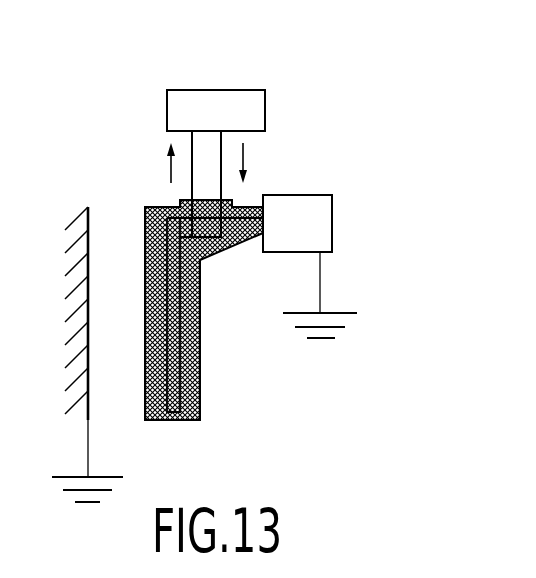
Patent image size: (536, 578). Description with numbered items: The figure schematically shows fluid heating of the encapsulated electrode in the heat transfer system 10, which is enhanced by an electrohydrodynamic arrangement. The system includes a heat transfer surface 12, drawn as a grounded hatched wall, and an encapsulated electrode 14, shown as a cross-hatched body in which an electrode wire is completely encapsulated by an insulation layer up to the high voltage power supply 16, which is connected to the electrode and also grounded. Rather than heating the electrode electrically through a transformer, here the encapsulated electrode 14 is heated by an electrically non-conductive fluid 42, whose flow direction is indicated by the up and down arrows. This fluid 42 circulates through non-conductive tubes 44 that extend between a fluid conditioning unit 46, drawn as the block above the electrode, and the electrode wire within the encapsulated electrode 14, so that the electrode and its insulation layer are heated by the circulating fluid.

The heat transfer system 10 is at (307, 104).
The heat transfer surface 12 is at (90, 216).
The encapsulated electrode 14 is at (225, 318).
The high voltage power supply 16 is at (322, 225).
The electrically non-conductive fluid 42 is at (166, 172).
The non-conductive tubes 44 is at (222, 140).
The fluid conditioning unit 46 is at (238, 100).